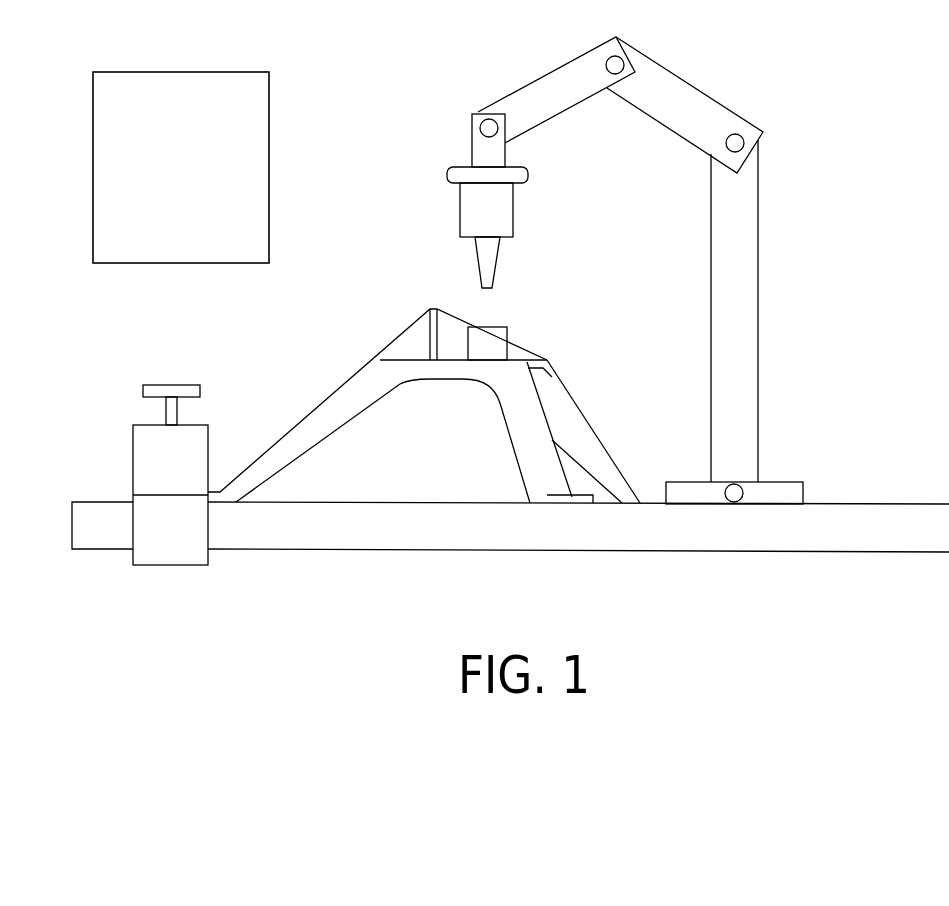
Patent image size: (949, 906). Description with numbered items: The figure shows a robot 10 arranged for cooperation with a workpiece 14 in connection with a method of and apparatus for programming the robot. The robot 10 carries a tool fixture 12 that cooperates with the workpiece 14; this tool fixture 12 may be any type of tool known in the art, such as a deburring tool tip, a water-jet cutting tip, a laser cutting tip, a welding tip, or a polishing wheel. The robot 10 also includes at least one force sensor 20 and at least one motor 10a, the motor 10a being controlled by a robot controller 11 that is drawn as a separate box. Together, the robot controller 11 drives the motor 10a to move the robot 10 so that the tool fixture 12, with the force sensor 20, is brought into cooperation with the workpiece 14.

The robot 10 is at (760, 253).
The motor 10a is at (743, 130).
The robot controller 11 is at (120, 72).
The tool fixture 12 is at (478, 265).
The workpiece 14 is at (338, 390).
The force sensor 20 is at (452, 175).